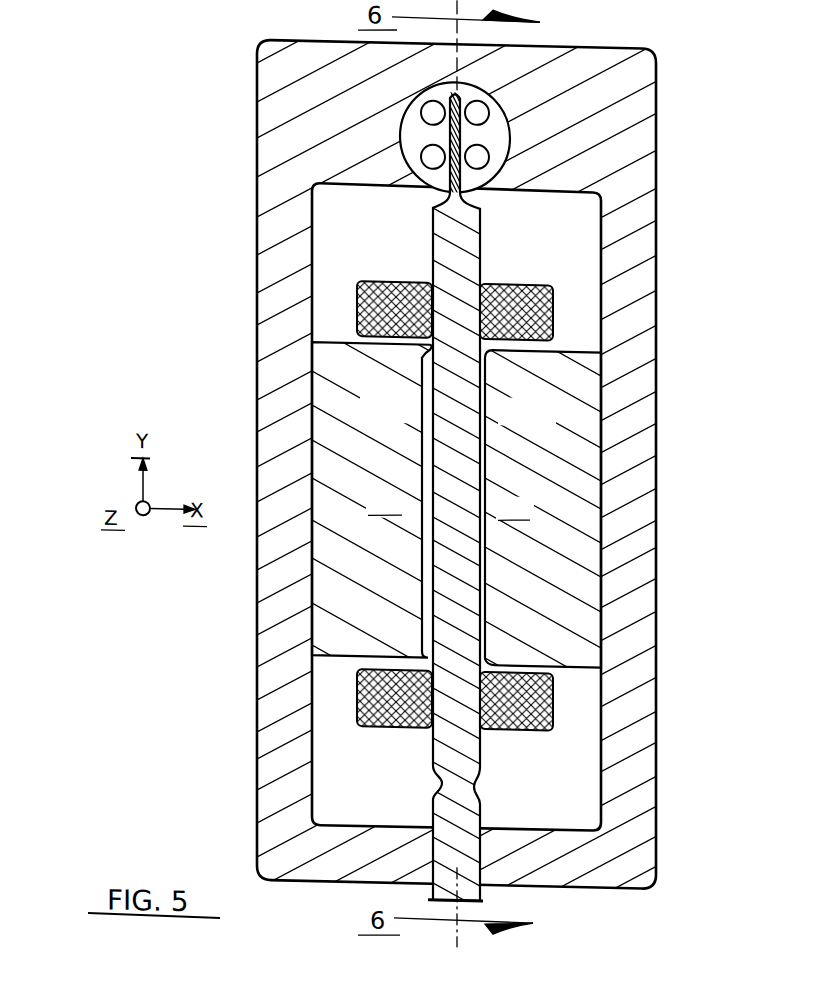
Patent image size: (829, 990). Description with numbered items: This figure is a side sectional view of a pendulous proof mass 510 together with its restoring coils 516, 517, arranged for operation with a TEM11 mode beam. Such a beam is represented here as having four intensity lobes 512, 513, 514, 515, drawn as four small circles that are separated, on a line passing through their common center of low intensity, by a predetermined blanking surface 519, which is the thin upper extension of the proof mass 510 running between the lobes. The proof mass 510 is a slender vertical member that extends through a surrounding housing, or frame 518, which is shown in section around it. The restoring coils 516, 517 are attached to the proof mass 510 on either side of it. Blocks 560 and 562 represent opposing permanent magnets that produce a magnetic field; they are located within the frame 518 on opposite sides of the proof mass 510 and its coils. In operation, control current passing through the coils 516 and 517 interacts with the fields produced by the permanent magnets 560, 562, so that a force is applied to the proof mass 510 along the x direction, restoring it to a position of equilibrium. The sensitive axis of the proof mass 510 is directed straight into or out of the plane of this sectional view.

The pendulous proof mass 510 is at (481, 754).
The intensity lobe 512 is at (489, 150).
The intensity lobe 513 is at (479, 104).
The intensity lobe 514 is at (421, 103).
The intensity lobe 515 is at (424, 142).
The restoring coil 516 is at (506, 278).
The restoring coil 517 is at (400, 273).
The housing, or frame 518 is at (657, 805).
The blanking surface 519 is at (483, 77).
The permanent magnet 560 is at (415, 411).
The permanent magnet 562 is at (552, 414).